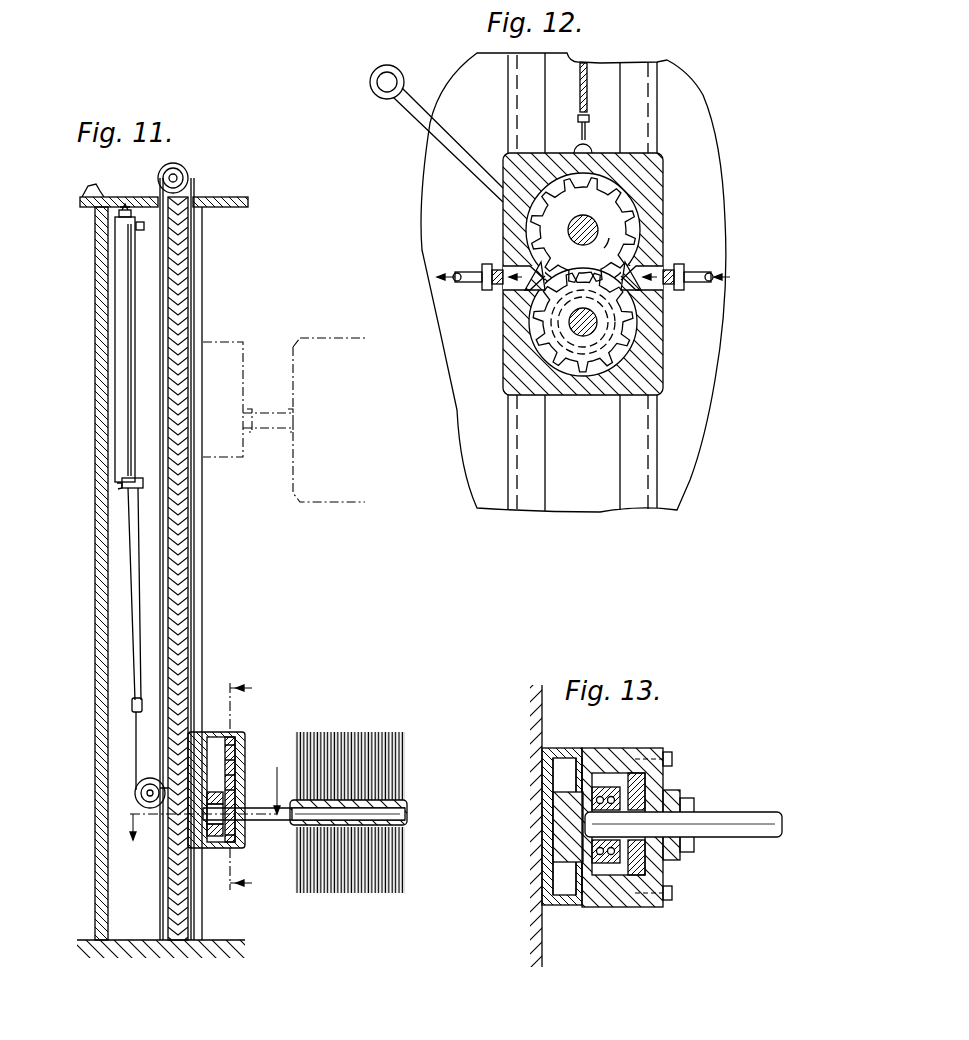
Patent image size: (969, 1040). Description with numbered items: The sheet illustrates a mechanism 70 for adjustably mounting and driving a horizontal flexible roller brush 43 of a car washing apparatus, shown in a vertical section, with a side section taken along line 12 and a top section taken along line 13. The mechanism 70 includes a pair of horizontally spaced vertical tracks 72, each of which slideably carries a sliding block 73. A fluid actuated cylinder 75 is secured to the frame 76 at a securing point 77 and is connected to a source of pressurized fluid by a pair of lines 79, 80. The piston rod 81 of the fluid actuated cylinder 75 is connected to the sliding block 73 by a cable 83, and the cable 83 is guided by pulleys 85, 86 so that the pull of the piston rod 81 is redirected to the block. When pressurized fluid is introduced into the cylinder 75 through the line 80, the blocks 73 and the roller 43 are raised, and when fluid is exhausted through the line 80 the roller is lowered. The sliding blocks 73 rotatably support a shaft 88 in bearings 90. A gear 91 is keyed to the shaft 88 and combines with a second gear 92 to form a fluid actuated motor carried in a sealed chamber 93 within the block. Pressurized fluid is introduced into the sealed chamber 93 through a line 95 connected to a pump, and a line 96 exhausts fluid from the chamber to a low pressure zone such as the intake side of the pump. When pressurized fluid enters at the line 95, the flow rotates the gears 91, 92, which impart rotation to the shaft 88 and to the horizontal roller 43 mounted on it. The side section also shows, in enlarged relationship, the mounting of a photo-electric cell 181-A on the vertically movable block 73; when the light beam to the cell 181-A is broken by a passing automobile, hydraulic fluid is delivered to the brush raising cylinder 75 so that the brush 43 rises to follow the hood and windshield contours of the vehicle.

In FIG. 11, the section line 12— 12 is at (253, 780).
In FIG. 11, the section line 13— 13 is at (203, 812).
In FIG. 11, the horizontal brush 43 is at (316, 732).
In FIG. 11, the mechanism 70 is at (204, 569).
In FIG. 11, the vertical tracks 72 is at (196, 500).
In FIG. 12, the vertical tracks 72 is at (652, 120).
In FIG. 13, the vertical tracks 72 is at (538, 836).
In FIG. 11, the sliding block 73 is at (200, 735).
In FIG. 12, the sliding block 73 is at (658, 173).
In FIG. 13, the sliding block 73 is at (603, 887).
In FIG. 11, the fluid actuated cylinder 75 is at (126, 358).
In FIG. 11, the frame 76 is at (97, 262).
In FIG. 11, the securing point 77 is at (123, 208).
In FIG. 11, the fluid line 79 is at (146, 226).
In FIG. 11, the fluid line 80 is at (120, 486).
In FIG. 11, the piston rod 81 is at (135, 572).
In FIG. 11, the cable 83 is at (133, 738).
In FIG. 12, the cable 83 is at (586, 96).
In FIG. 11, the pulley 85 is at (140, 798).
In FIG. 11, the pulley 86 is at (186, 170).
In FIG. 11, the shaft 88 is at (402, 815).
In FIG. 12, the shaft 88 is at (566, 323).
In FIG. 13, the shaft 88 is at (705, 820).
In FIG. 11, the bearings 90 is at (218, 838).
In FIG. 13, the bearings 90 is at (608, 788).
In FIG. 11, the gear 91 is at (240, 830).
In FIG. 12, the gear 91 is at (638, 352).
In FIG. 13, the gear 91 is at (646, 853).
In FIG. 12, the gear 92 is at (550, 230).
In FIG. 12, the sealed chamber 93 is at (640, 255).
In FIG. 12, the line 95 is at (706, 281).
In FIG. 12, the line 96 is at (478, 265).
In FIG. 12, the photo-electric cell 181-A is at (370, 82).